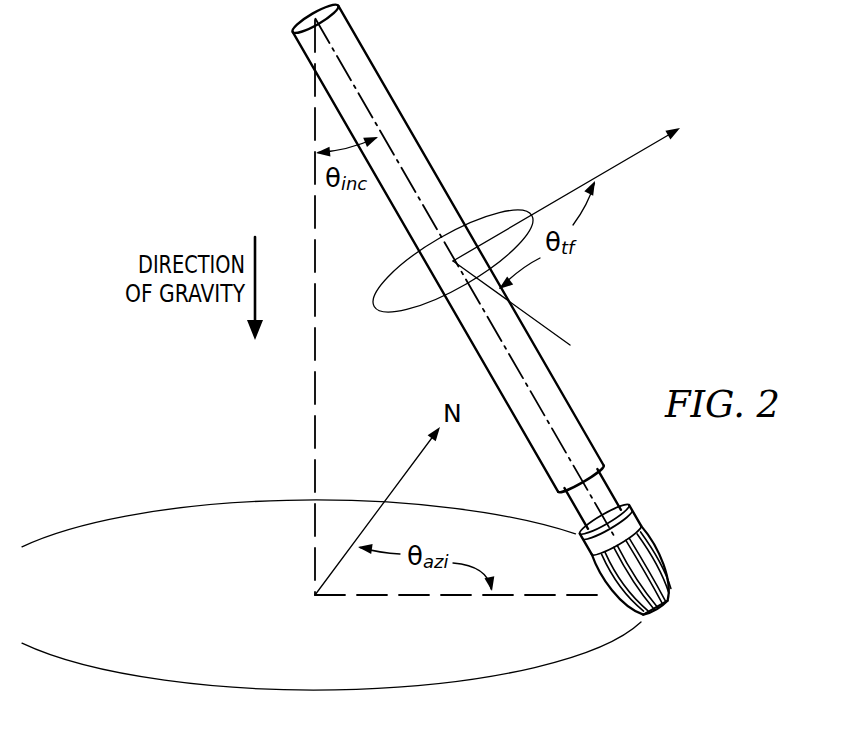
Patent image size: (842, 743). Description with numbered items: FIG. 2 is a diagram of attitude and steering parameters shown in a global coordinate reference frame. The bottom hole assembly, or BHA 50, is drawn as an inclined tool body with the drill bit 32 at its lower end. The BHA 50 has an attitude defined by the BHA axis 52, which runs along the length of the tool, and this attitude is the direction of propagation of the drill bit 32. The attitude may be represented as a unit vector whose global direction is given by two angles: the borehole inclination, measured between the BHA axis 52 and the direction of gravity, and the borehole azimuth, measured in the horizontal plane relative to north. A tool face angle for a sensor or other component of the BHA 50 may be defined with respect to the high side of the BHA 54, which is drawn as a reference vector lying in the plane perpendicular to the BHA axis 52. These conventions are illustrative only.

The drill bit 32 is at (667, 549).
The BHA 50 is at (510, 95).
The BHA axis 52 is at (373, 117).
The high side of the BHA 54 is at (633, 155).